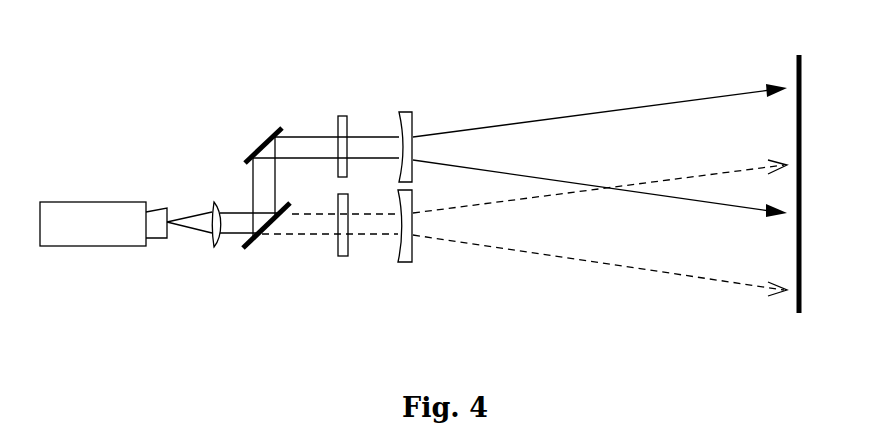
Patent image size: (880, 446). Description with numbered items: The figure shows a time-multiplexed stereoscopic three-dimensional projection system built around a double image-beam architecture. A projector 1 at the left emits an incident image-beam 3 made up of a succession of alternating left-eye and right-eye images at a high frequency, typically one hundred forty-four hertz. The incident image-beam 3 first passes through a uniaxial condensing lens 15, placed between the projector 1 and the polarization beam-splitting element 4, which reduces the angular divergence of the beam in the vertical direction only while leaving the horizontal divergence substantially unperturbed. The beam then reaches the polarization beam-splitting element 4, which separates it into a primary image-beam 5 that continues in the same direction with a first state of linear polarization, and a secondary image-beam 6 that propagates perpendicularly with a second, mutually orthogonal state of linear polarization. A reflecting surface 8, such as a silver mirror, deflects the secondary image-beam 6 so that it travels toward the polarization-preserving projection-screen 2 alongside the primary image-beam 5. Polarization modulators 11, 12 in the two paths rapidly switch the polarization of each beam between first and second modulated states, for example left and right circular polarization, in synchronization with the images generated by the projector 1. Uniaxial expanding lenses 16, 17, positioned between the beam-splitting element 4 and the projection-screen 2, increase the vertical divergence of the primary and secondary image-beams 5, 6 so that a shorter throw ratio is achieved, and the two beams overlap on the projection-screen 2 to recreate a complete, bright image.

The projector 1 is at (80, 196).
The polarization-preserving projection-screen 2 is at (807, 63).
The incident image-beam 3 is at (192, 209).
The polarization beam-splitting element 4 is at (253, 256).
The primary image-beam 5 is at (605, 275).
The secondary image-beam 6 is at (605, 106).
The reflecting surface 8 is at (254, 141).
The polarization modulator 11 is at (343, 103).
The polarization modulator 12 is at (341, 269).
The uniaxial condensing lens 15 is at (208, 254).
The uniaxial expanding lens 16 is at (417, 268).
The uniaxial expanding lens 17 is at (418, 103).